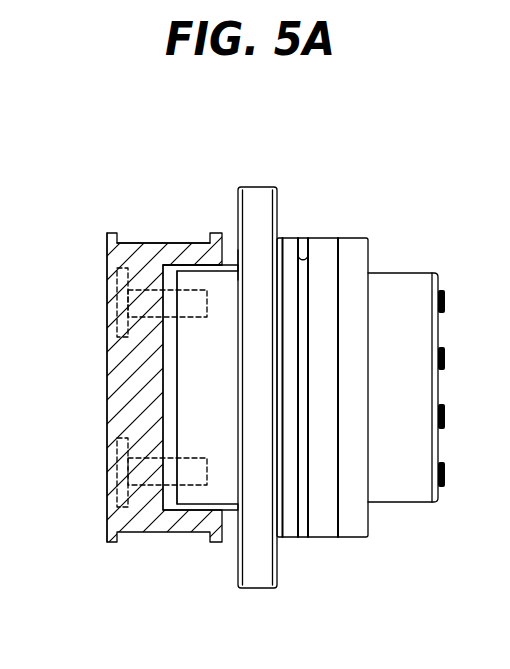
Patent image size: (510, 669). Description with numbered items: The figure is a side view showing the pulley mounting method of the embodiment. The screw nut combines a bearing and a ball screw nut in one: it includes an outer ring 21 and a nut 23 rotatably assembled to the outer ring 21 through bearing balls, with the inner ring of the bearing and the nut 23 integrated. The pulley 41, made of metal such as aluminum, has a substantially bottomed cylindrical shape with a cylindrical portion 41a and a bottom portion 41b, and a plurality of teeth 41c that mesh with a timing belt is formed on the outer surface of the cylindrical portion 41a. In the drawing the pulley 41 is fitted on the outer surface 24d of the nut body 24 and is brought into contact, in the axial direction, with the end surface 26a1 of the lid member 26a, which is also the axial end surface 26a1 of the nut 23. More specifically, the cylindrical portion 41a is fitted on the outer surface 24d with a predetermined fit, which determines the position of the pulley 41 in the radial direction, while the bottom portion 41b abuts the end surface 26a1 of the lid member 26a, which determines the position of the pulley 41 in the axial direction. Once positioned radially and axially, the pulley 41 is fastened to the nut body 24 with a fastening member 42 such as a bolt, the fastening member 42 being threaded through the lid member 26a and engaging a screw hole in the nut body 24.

The outer ring 21 is at (261, 186).
The nut 23 is at (399, 272).
The nut body 24 is at (207, 350).
The outer surface 24d is at (236, 264).
The lid member 26a is at (163, 408).
The end surface 26a1 is at (165, 443).
The pulley 41 is at (111, 230).
The cylindrical portion 41a is at (200, 258).
The bottom portion 41b is at (107, 351).
The teeth 41c is at (124, 234).
The fastening member 42 is at (107, 305).